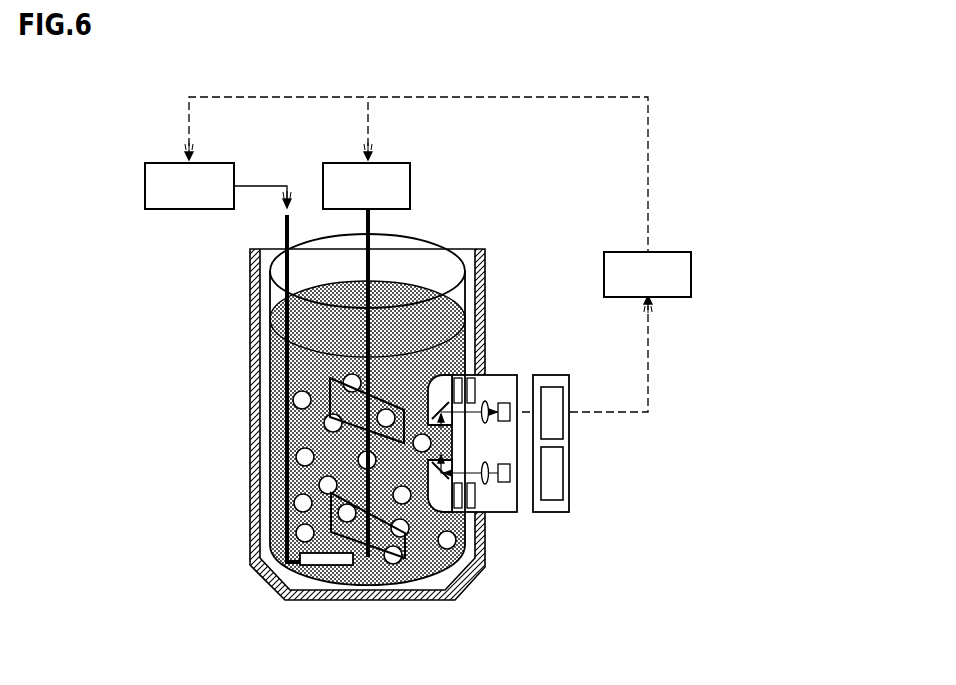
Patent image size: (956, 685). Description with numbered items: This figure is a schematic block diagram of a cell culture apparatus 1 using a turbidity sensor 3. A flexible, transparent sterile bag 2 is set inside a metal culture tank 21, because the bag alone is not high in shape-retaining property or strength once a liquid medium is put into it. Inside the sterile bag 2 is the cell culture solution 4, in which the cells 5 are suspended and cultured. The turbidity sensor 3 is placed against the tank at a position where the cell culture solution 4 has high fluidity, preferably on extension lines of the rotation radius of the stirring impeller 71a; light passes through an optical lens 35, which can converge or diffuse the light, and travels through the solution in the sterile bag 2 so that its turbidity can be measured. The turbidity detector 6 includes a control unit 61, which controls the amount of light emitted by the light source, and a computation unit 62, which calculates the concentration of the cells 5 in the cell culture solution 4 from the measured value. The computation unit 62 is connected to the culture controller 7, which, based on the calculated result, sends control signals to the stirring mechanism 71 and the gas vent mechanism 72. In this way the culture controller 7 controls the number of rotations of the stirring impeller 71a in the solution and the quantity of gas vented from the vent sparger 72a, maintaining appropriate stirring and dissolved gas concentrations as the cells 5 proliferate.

The cell culture apparatus 1 is at (690, 134).
The sterile bag 2 is at (431, 243).
The culture tank 21 is at (485, 272).
The turbidity sensor 3 is at (467, 506).
The optical lens 35 is at (432, 508).
The cell culture solution 4 is at (437, 330).
The cell 5 is at (300, 455).
The turbidity detector 6 is at (578, 471).
The control unit 61 is at (563, 470).
The computation unit 62 is at (563, 425).
The culture controller 7 is at (672, 252).
The stirring mechanism 71 is at (303, 338).
The stirring impeller 71a is at (330, 385).
The gas vent mechanism 72 is at (250, 378).
The vent sparger 72a is at (325, 565).